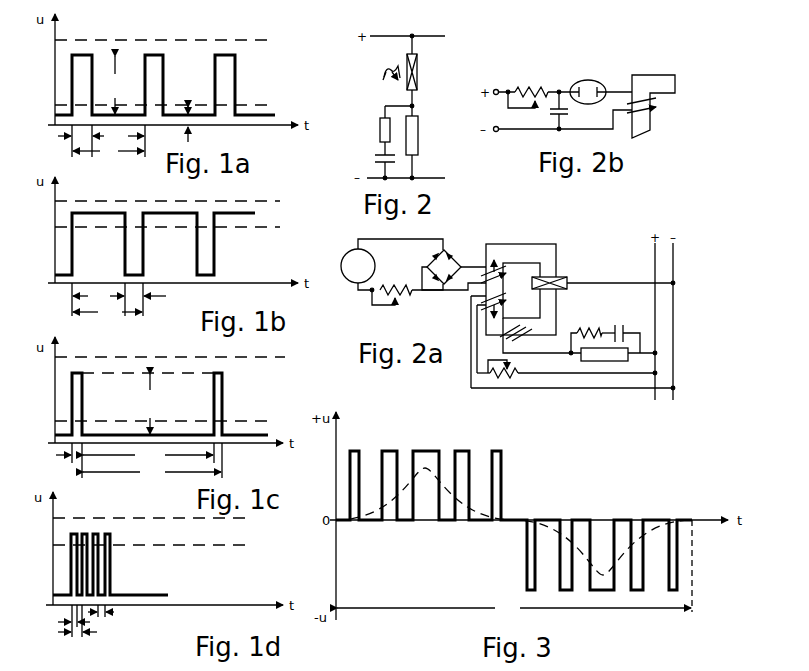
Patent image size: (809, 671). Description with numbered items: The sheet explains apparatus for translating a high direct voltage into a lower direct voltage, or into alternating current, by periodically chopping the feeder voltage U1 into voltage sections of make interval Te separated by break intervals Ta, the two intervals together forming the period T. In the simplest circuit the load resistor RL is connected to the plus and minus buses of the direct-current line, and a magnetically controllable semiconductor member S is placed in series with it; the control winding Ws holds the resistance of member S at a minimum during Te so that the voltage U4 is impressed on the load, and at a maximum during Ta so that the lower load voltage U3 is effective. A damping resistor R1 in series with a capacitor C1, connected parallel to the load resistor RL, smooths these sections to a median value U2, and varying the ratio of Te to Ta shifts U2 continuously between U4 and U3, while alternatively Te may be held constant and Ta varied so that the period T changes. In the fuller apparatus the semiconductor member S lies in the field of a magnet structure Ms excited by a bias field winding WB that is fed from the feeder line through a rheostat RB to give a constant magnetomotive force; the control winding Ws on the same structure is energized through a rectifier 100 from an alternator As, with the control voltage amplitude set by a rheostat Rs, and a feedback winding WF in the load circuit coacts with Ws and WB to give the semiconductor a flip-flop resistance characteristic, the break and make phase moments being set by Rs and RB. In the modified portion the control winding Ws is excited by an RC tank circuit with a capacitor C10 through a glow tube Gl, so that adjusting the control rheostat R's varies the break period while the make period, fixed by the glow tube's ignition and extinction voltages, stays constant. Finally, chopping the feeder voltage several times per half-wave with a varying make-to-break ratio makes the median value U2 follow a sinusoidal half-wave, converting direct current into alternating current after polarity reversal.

In FIG. 1A, the feeder voltage U1 is at (162, 41).
In FIG. 1B, the feeder voltage U1 is at (137, 202).
In FIG. 1C, the feeder voltage U1 is at (125, 358).
In FIG. 1D, the feeder voltage U1 is at (143, 519).
In FIG. 1A, the median converted voltage U2 is at (240, 106).
In FIG. 1B, the median converted voltage U2 is at (116, 232).
In FIG. 1C, the median converted voltage U2 is at (228, 422).
In FIG. 1D, the median converted voltage U2 is at (143, 546).
In FIG. 3, the median converted voltage U2 is at (483, 497).
In FIG. 1A, the lower load voltage U3 is at (190, 122).
In FIG. 1A, the load voltage during make interval U4 is at (113, 85).
In FIG. 1C, the load voltage during make interval U4 is at (148, 404).
In FIG. 1A, the make interval Te is at (81, 137).
In FIG. 1B, the make interval Te is at (98, 296).
In FIG. 1C, the make interval Te is at (77, 460).
In FIG. 1D, the make interval Te is at (63, 626).
In FIG. 1A, the break interval Ta is at (125, 137).
In FIG. 1B, the break interval Ta is at (145, 296).
In FIG. 1C, the break interval Ta is at (148, 456).
In FIG. 1D, the break interval Ta is at (102, 614).
In FIG. 1A, the period T is at (108, 152).
In FIG. 1B, the period T is at (107, 313).
In FIG. 1C, the period T is at (152, 473).
In FIG. 1D, the period T is at (77, 638).
In FIG. 3, the period T is at (514, 608).
In FIG. 2, the control winding Ws is at (396, 68).
In FIG. 2B, the control winding Ws is at (656, 108).
In FIG. 2A, the control winding Ws is at (484, 267).
In FIG. 2, the magnetically controllable semiconductor member S is at (418, 74).
In FIG. 2A, the magnetically controllable semiconductor member S is at (560, 290).
In FIG. 2, the damping resistor R1 is at (380, 128).
In FIG. 2A, the damping resistor R1 is at (593, 331).
In FIG. 2, the load resistor RL is at (418, 128).
In FIG. 2A, the load resistor RL is at (580, 360).
In FIG. 2, the capacitor C1 is at (375, 158).
In FIG. 2A, the capacitor C1 is at (626, 334).
In FIG. 2B, the control rheostat R's is at (528, 85).
In FIG. 2B, the glow tube Gl is at (590, 85).
In FIG. 2B, the tank circuit capacitor C10 is at (568, 111).
In FIG. 2B, the magnet structure Ms is at (650, 85).
In FIG. 2A, the magnet structure Ms is at (548, 262).
In FIG. 2A, the alternator As is at (351, 256).
In FIG. 2A, the rectifier 100 is at (437, 253).
In FIG. 2A, the rheostat Rs is at (393, 308).
In FIG. 2A, the bias field winding WB is at (471, 312).
In FIG. 2A, the feedback winding WF is at (518, 338).
In FIG. 2A, the rheostat RB is at (507, 378).